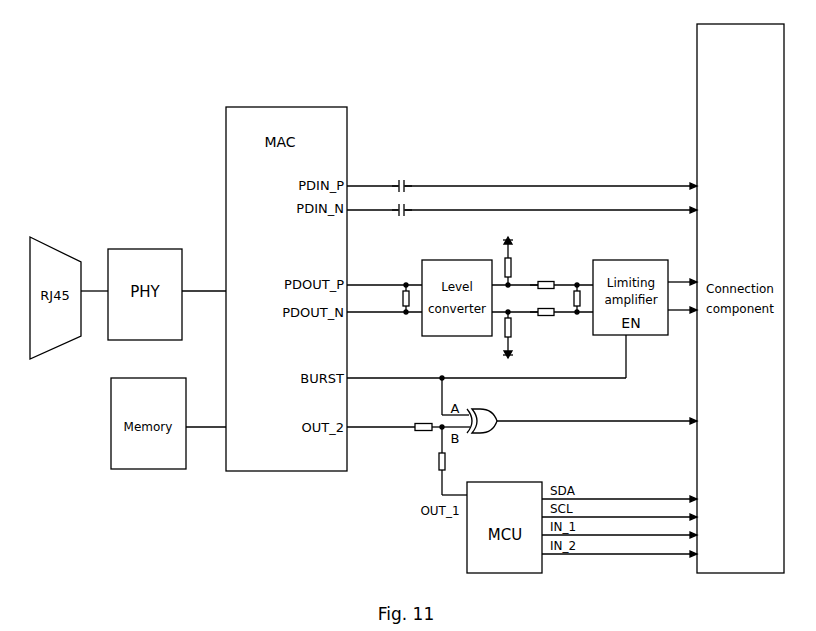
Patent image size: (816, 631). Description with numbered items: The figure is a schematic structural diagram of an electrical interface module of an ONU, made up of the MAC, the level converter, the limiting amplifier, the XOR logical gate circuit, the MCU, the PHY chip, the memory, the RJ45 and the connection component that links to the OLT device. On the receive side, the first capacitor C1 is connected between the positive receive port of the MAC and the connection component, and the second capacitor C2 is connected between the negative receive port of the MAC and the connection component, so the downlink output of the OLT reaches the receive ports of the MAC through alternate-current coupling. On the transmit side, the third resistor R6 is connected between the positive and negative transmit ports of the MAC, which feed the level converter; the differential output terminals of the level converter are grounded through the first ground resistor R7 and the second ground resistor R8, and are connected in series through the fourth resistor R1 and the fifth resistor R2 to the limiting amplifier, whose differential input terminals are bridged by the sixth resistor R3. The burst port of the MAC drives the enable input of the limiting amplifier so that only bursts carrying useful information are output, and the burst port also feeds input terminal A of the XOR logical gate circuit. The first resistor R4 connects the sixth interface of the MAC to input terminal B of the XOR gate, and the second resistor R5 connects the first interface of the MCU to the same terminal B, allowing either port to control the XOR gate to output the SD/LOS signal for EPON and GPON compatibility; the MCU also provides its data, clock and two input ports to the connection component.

The first capacitor C1 is at (402, 176).
The second capacitor C2 is at (402, 221).
The fourth resistor R1 is at (561, 278).
The fifth resistor R2 is at (561, 320).
The sixth resistor R3 is at (567, 298).
The first resistor R4 is at (394, 419).
The second resistor R5 is at (453, 461).
The third resistor R6 is at (396, 298).
The first ground resistor R7 is at (516, 262).
The second ground resistor R8 is at (516, 334).